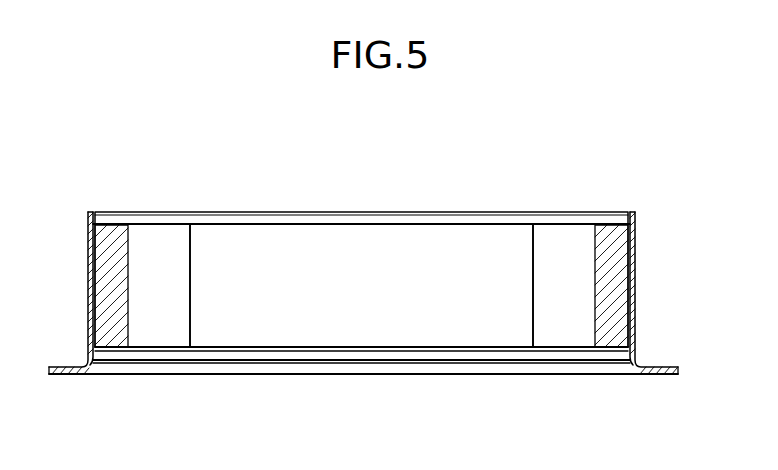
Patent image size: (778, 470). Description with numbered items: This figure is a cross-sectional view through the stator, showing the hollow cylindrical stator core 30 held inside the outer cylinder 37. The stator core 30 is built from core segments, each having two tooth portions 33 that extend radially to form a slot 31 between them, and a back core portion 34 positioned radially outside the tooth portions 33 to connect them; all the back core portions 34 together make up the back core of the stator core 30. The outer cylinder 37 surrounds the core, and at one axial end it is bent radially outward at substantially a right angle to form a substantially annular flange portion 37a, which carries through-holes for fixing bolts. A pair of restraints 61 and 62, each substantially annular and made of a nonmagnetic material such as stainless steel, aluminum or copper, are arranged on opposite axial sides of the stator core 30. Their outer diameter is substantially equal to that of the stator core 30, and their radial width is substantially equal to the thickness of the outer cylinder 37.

The stator core 30 is at (150, 224).
The slot 31 is at (158, 300).
The tooth portion 33 is at (175, 263).
The back core portion 34 is at (102, 278).
The outer cylinder 37 is at (638, 243).
The flange portion 37a is at (659, 368).
The restraint 61 is at (272, 212).
The restraint 62 is at (291, 361).